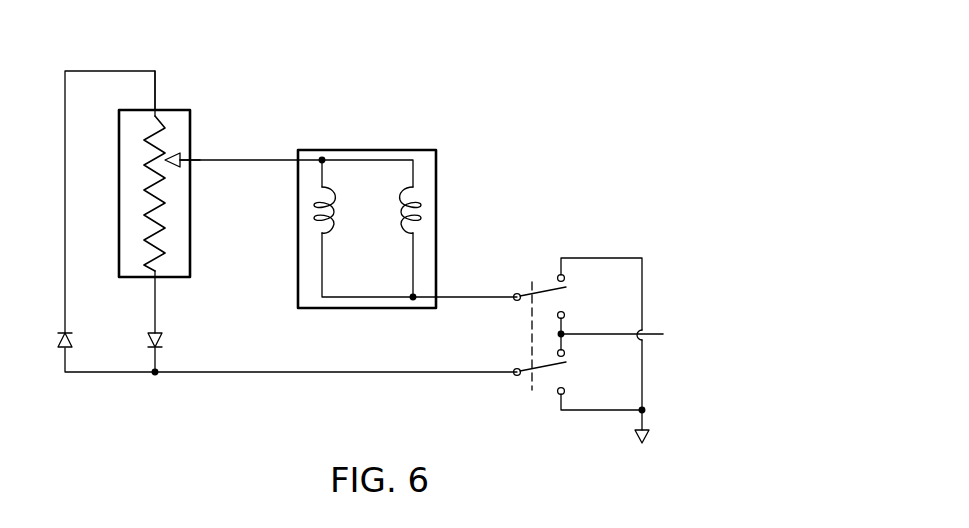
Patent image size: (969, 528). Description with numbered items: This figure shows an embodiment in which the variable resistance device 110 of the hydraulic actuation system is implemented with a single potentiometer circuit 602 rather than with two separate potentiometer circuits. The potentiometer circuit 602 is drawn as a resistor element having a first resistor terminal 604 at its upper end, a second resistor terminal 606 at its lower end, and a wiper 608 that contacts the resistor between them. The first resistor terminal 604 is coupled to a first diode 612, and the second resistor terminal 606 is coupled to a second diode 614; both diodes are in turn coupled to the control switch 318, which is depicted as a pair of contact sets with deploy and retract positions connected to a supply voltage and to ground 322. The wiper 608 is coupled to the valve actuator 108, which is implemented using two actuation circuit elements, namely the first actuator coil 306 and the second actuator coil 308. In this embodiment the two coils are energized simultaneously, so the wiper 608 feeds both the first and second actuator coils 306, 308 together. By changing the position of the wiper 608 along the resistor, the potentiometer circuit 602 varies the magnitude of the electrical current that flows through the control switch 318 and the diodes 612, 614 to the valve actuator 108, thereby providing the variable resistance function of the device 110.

The variable resistance device 110 is at (517, 95).
The valve actuator 108 is at (367, 204).
The first actuator coil 306 is at (397, 226).
The second actuator coil 308 is at (338, 197).
The control switch 318 is at (533, 253).
The ground 322 is at (642, 443).
The potentiometer circuit 602 is at (192, 220).
The first resistor terminal 604 is at (157, 108).
The second resistor terminal 606 is at (157, 280).
The wiper 608 is at (192, 158).
The first diode 612 is at (72, 338).
The second diode 614 is at (161, 340).